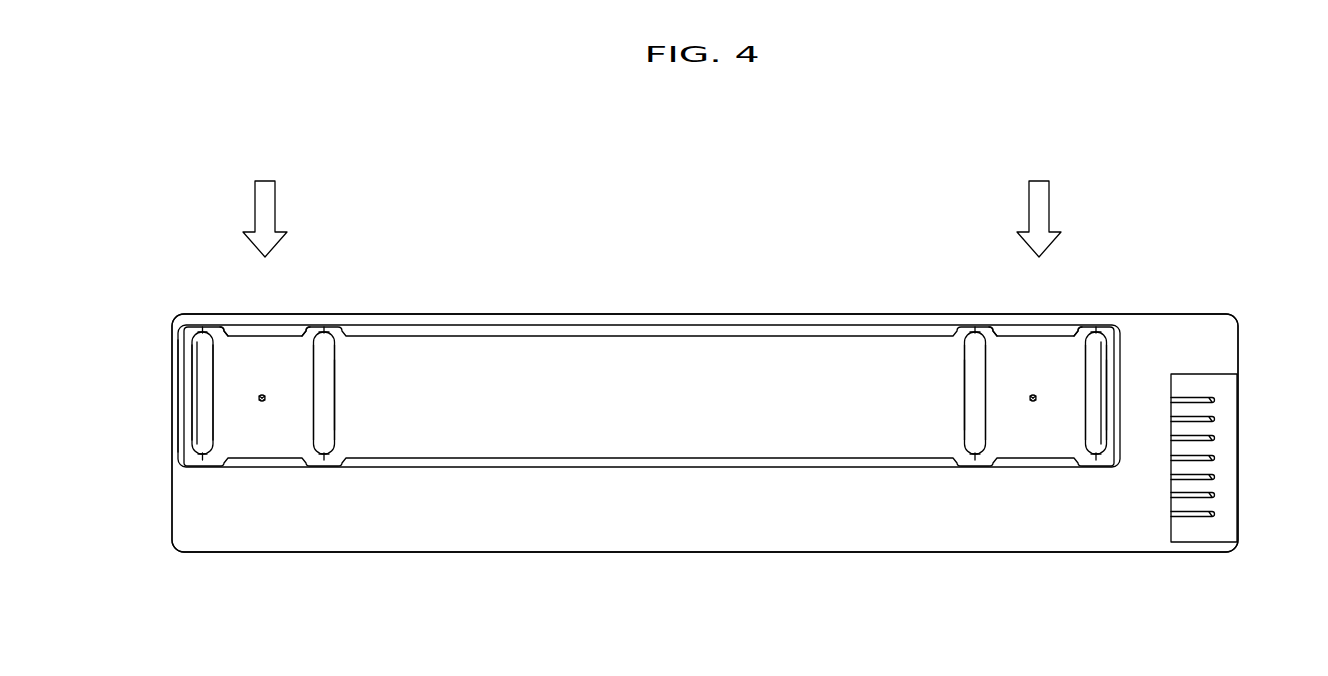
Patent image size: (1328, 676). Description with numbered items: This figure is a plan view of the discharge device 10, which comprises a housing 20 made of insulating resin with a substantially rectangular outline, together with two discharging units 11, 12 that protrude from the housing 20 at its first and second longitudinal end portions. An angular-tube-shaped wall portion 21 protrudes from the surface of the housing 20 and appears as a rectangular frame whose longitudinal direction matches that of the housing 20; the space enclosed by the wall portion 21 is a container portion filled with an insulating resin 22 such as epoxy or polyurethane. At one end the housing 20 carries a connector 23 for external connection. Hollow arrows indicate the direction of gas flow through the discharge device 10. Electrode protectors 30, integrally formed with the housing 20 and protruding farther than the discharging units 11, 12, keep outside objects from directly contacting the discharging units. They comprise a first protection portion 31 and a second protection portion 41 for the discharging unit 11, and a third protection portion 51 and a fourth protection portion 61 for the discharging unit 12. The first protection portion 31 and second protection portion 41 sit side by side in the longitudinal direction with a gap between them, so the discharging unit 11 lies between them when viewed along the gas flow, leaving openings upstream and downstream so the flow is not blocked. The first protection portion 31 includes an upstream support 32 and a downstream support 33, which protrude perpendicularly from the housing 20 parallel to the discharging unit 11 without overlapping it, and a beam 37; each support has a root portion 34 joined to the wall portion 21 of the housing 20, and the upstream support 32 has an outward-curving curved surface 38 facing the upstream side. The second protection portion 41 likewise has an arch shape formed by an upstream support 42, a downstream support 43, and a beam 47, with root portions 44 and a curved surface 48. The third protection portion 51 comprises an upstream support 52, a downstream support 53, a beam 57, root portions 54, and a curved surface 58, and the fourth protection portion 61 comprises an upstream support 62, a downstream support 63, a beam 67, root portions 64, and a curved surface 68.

The discharge device 10 is at (1157, 206).
The discharging unit 11 is at (258, 412).
The discharging unit 12 is at (1031, 412).
The housing 20 is at (562, 522).
The wall portion 21 is at (589, 330).
The resin 22 is at (683, 392).
The connector 23 is at (1216, 457).
The electrode protector 30 is at (665, 419).
The first protection portion 31 is at (197, 385).
The upstream support 32 is at (203, 331).
The downstream support 33 is at (203, 466).
The root portion 34 is at (191, 332).
The beam 37 is at (200, 403).
The curved surface 38 is at (224, 333).
The second protection portion 41 is at (327, 387).
The upstream support 42 is at (323, 333).
The downstream support 43 is at (323, 466).
The root portion 44 is at (337, 333).
The beam 47 is at (327, 402).
The curved surface 48 is at (310, 333).
The third protection portion 51 is at (1100, 387).
The upstream support 52 is at (1097, 333).
The downstream support 53 is at (1097, 466).
The root portion 54 is at (1105, 333).
The beam 57 is at (1100, 403).
The curved surface 58 is at (1080, 333).
The fourth protection portion 61 is at (955, 393).
The upstream support 62 is at (976, 333).
The downstream support 63 is at (975, 466).
The root portion 64 is at (964, 333).
The beam 67 is at (973, 403).
The curved surface 68 is at (994, 333).